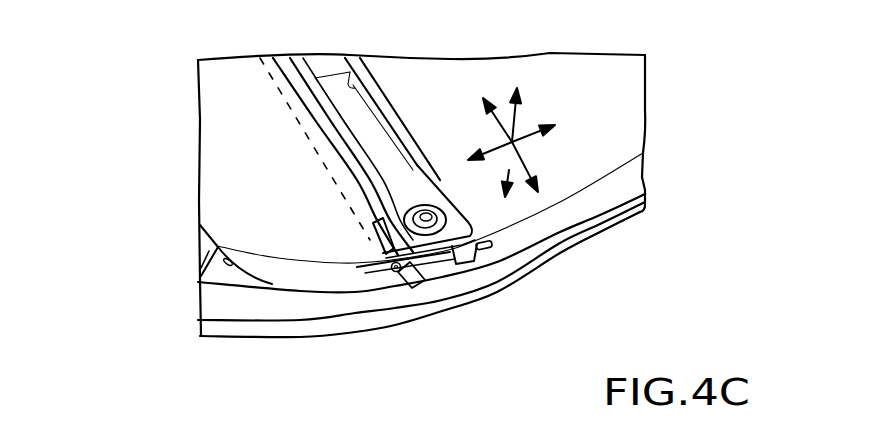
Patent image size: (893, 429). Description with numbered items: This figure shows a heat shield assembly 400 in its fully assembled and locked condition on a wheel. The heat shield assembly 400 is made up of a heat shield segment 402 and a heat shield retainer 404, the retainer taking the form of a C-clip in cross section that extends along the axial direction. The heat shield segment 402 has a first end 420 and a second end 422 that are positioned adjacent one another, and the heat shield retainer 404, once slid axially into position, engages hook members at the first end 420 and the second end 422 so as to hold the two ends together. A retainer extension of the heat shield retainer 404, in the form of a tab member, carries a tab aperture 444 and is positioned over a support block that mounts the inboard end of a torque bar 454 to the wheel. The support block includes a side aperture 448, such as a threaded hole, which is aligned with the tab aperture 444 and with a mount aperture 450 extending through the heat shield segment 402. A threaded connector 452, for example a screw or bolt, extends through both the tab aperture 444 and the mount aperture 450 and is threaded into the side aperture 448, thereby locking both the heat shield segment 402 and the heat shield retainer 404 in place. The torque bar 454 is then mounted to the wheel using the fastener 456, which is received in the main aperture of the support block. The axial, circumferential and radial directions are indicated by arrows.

The heat shield assembly 400 is at (127, 173).
The heat shield segment 402 is at (627, 95).
The heat shield retainer 404 is at (318, 141).
The first end 420 is at (580, 177).
The second end 422 is at (272, 247).
The tab aperture 444 is at (380, 266).
The side aperture 448 is at (405, 276).
The mount aperture 450 is at (398, 263).
The threaded connector 452 is at (423, 268).
The torque bar 454 is at (350, 110).
The fastener 456 is at (418, 205).